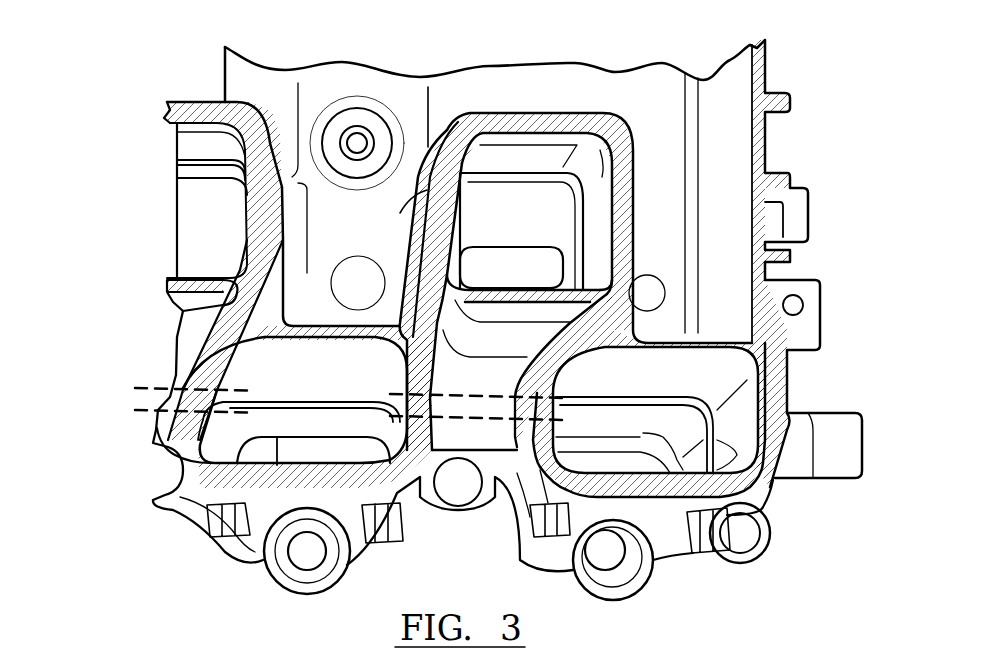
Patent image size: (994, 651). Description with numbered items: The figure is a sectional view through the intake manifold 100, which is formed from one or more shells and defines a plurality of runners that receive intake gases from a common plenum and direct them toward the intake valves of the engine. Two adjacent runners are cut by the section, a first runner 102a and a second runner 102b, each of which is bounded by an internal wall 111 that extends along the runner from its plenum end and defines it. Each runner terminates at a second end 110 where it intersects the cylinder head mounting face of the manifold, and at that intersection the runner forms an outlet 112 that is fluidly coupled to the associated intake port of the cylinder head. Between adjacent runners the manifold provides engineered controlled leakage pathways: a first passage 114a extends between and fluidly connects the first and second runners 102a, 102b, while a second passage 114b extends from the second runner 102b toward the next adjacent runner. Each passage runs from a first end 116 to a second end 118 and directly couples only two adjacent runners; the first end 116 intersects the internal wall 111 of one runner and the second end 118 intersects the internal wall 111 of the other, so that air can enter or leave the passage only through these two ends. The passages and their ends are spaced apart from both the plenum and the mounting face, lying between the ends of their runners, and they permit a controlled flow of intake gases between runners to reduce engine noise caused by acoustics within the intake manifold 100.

The intake manifold 100 is at (117, 186).
The first runner 102a is at (760, 400).
The second runner 102b is at (229, 464).
The second end of runner 110 is at (259, 514).
The outlet 112 is at (277, 440).
The internal wall 111 is at (173, 332).
The first passage 114a is at (497, 410).
The second passage 114b is at (185, 400).
The first end of passage 116 is at (560, 418).
The second end of passage 118 is at (380, 388).